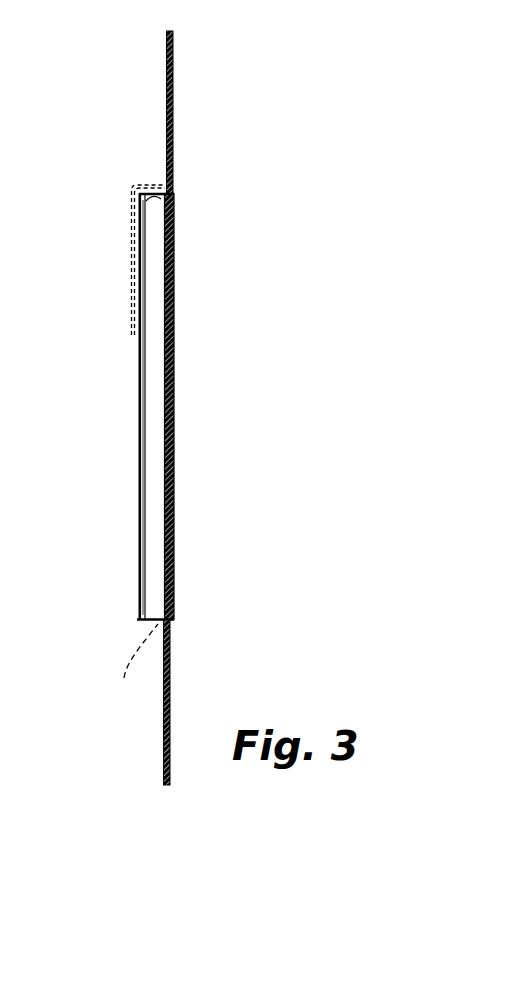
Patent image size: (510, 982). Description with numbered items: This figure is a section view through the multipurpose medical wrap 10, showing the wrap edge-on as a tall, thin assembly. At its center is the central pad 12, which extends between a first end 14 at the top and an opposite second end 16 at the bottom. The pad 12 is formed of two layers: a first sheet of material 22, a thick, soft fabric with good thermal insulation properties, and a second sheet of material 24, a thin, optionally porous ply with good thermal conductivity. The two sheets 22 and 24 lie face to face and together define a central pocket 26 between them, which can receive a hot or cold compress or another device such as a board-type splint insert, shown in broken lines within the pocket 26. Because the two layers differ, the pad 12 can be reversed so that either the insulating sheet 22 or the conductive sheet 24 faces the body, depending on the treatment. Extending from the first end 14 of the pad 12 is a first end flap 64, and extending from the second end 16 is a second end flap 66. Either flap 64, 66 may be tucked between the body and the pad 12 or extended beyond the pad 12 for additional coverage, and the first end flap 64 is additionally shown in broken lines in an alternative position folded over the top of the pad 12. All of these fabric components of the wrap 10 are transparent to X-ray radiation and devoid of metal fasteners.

The wrap 10 is at (202, 412).
The central pad 12 is at (148, 403).
The first end 14 is at (160, 198).
The second end 16 is at (143, 623).
The first sheet of material 22 is at (175, 304).
The second sheet of material 24 is at (140, 415).
The central pocket 26 is at (136, 521).
The first end flap 64 is at (173, 78).
The second end flap 66 is at (163, 763).